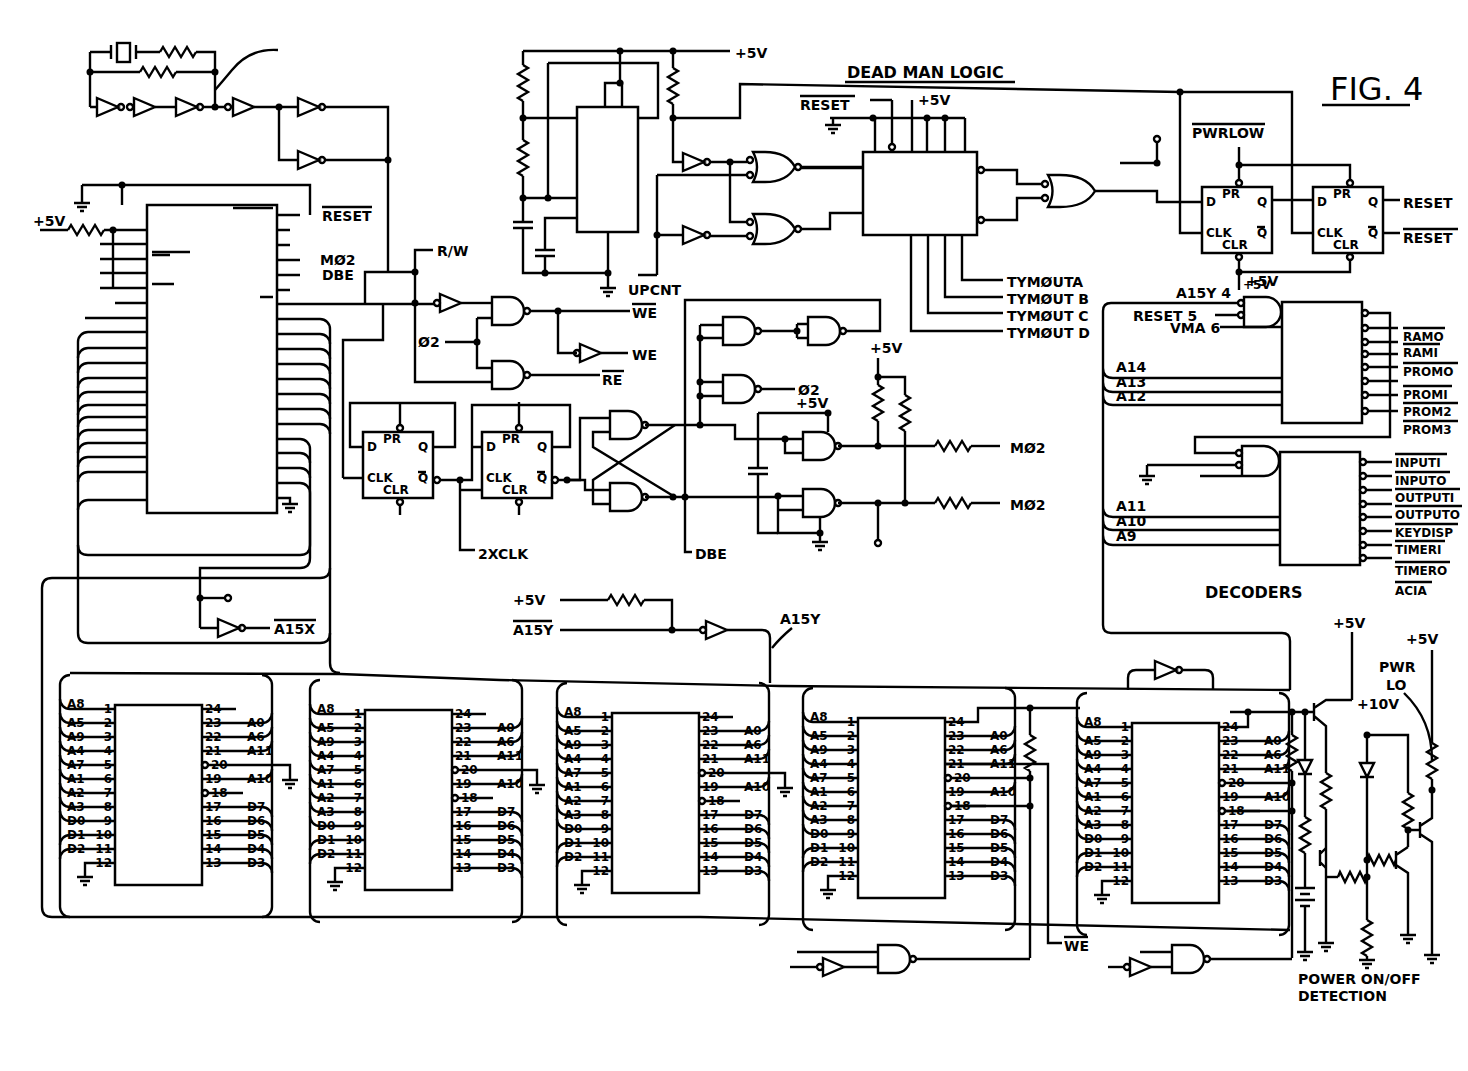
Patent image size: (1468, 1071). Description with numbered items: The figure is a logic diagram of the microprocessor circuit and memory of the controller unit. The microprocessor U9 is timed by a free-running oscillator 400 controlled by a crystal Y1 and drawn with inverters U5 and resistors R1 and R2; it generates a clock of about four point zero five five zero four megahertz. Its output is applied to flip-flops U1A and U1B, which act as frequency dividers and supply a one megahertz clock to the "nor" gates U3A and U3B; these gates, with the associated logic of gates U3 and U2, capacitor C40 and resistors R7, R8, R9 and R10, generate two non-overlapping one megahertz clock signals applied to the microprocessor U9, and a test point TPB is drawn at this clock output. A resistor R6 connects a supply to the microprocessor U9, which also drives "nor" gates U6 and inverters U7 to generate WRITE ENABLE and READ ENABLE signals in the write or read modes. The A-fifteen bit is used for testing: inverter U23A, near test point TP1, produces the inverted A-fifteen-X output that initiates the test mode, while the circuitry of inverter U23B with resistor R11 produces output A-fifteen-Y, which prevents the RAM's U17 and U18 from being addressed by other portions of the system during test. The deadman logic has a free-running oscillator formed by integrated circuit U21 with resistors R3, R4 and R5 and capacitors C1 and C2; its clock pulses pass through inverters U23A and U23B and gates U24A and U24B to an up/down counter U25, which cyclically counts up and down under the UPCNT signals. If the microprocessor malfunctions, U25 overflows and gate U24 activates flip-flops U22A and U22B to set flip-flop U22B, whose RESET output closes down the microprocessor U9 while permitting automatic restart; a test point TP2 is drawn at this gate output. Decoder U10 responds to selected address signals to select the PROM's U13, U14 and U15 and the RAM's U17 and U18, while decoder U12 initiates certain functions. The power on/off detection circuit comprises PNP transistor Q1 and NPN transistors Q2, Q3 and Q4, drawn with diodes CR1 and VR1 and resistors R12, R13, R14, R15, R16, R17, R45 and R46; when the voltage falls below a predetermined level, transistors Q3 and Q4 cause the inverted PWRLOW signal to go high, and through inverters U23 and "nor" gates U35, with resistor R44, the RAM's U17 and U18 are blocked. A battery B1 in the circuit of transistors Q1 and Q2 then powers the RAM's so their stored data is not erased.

The free-running oscillator 400 is at (119, 151).
The crystal Y1 is at (102, 47).
The resistor R1 is at (192, 55).
The resistor R2 is at (176, 74).
The resistor R6 is at (76, 238).
The inverter U5 is at (237, 179).
The microprocessor U9 is at (256, 368).
The test point TP1 is at (232, 601).
The inverter U23A is at (226, 634).
The inverter U23B is at (712, 628).
The resistor R11 is at (637, 600).
The inverter U7 is at (1183, 662).
The "nor" gates U6 is at (522, 334).
The flip-flop U1A is at (401, 467).
The flip-flop U1B is at (514, 468).
The "nor" gate U3A is at (676, 443).
The "nor" gate U3B is at (672, 488).
The NAND gate U3 is at (782, 398).
The NAND gate U2 is at (816, 452).
The capacitor C40 is at (750, 474).
The resistor R7 is at (874, 402).
The resistor R8 is at (908, 406).
The resistor R9 is at (942, 446).
The resistor R10 is at (940, 504).
The test point TPB is at (885, 547).
The resistor R3 is at (518, 92).
The resistor R5 is at (516, 164).
The capacitor C1 is at (510, 222).
The capacitor C2 is at (572, 248).
The integrated circuit U21 is at (602, 173).
The resistor R4 is at (676, 94).
The gate U24A is at (800, 162).
The gate U24B is at (798, 226).
The up/down counter U25 is at (921, 215).
The gate U24 is at (1072, 178).
The test point TP2 is at (1155, 140).
The flip-flop U22A is at (1267, 218).
The flip-flop U22B is at (1348, 218).
The decoder U10 is at (1296, 375).
The decoder U12 is at (1265, 500).
The PROM U13 is at (179, 796).
The PROM U14 is at (427, 801).
The PROM U15 is at (675, 804).
The RAM U17 is at (941, 815).
The resistor R44 is at (1046, 832).
The RAM U18 is at (1184, 814).
The "nor" gates U35 is at (913, 970).
The inverters U23 is at (827, 974).
The resistor R45 is at (1292, 728).
The PNP transistor Q1 is at (1318, 708).
The diode CR1 is at (1327, 764).
The resistor R15 is at (1328, 852).
The battery B1 is at (1298, 905).
The resistor R12 is at (1338, 862).
The NPN transistor Q2 is at (1334, 859).
The resistor R17 is at (1346, 886).
The zener diode VR1 is at (1352, 796).
The resistor R46 is at (1382, 944).
The resistor R16 is at (1382, 842).
The resistor R13 is at (1390, 791).
The NPN transistor Q3 is at (1413, 895).
The NPN transistor Q4 is at (1431, 871).
The resistor R14 is at (1432, 748).